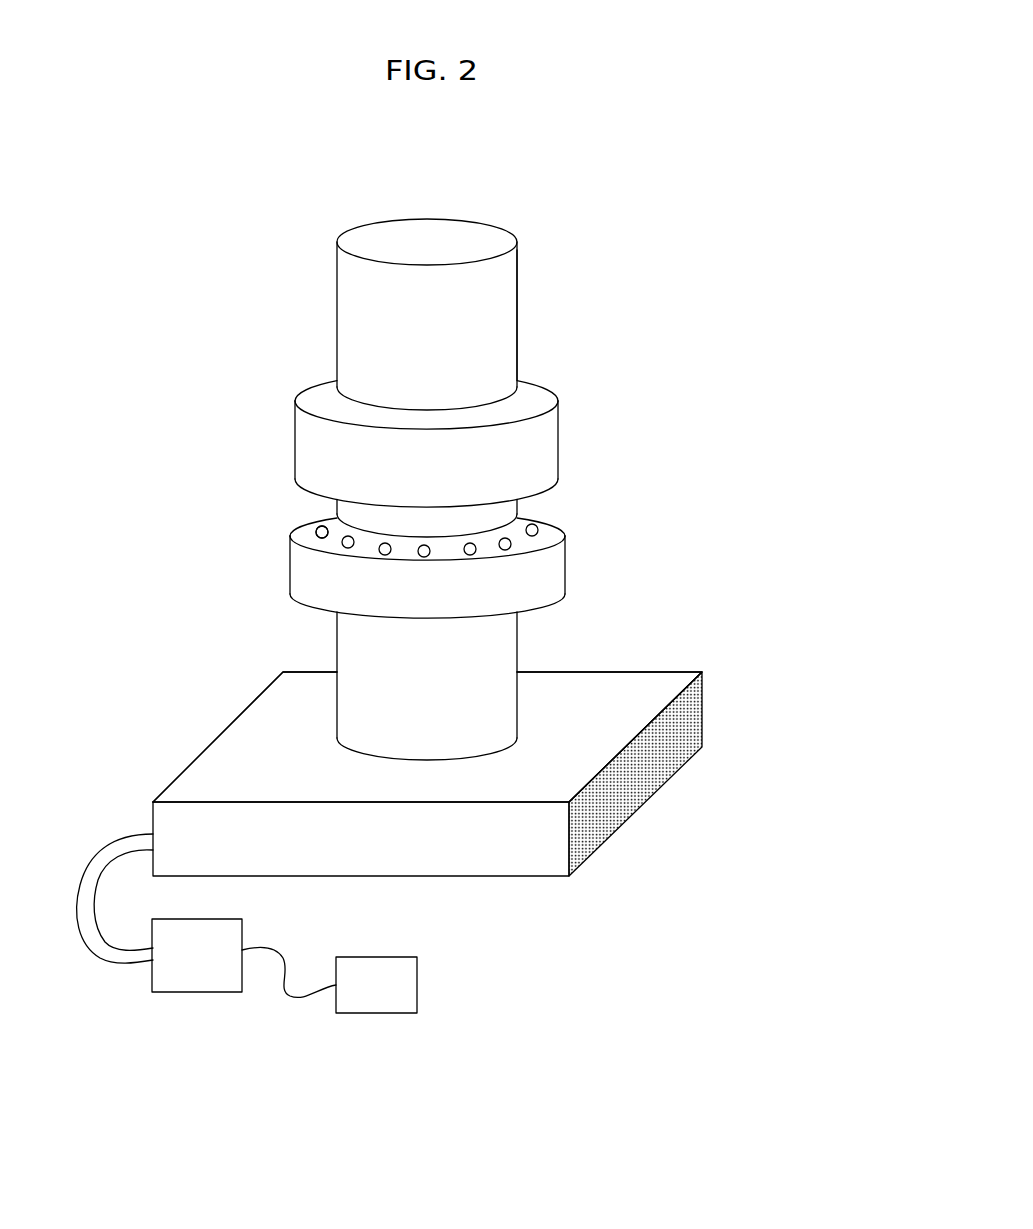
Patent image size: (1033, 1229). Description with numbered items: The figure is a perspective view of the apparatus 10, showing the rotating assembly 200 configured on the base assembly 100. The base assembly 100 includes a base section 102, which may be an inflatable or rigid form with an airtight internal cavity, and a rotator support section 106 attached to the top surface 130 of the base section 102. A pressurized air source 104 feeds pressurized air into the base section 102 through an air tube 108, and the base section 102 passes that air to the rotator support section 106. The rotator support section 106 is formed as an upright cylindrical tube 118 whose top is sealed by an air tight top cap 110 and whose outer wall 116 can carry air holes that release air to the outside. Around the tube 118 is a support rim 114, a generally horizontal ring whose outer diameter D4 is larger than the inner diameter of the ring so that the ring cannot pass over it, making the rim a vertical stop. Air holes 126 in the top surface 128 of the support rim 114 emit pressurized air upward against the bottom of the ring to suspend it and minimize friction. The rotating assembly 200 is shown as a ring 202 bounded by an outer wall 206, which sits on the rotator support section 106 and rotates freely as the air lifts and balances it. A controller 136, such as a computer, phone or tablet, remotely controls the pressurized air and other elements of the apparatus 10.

The rotating assembly 200 is at (633, 155).
The apparatus 10 is at (178, 292).
The base assembly 100 is at (675, 602).
The top cap 110 is at (472, 237).
The outer wall 116 is at (478, 355).
The cylindrical tube 118 is at (517, 297).
The rotator support section 106 is at (441, 433).
The ring 202 is at (559, 410).
The outer wall 206 is at (527, 445).
The support rim 114 is at (560, 523).
The air holes 126 is at (316, 527).
The top surface 128 is at (305, 533).
The outer diameter of rim D4 is at (653, 562).
The base section 102 is at (618, 793).
The top surface 130 is at (595, 718).
The air tube 108 is at (105, 843).
The pressurized air source 104 is at (192, 966).
The controller 136 is at (380, 988).